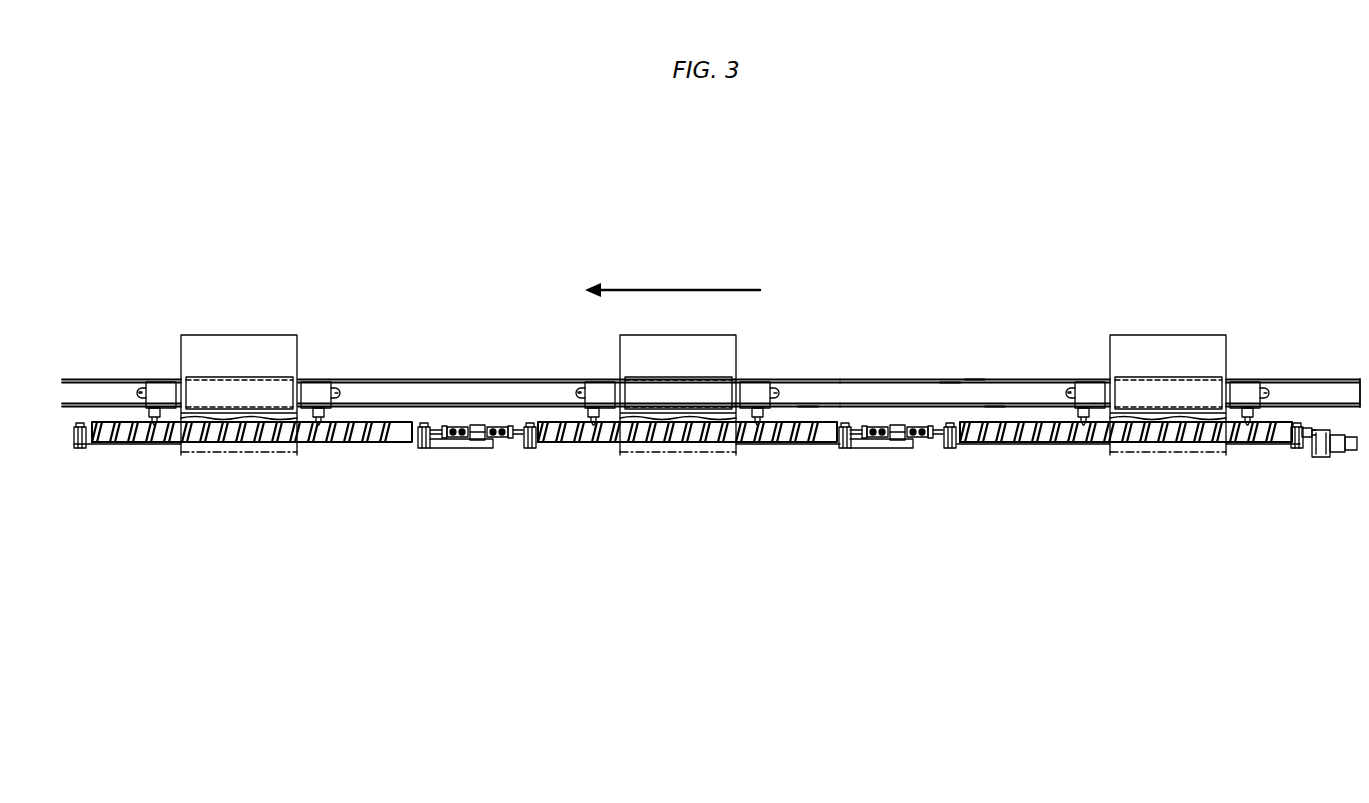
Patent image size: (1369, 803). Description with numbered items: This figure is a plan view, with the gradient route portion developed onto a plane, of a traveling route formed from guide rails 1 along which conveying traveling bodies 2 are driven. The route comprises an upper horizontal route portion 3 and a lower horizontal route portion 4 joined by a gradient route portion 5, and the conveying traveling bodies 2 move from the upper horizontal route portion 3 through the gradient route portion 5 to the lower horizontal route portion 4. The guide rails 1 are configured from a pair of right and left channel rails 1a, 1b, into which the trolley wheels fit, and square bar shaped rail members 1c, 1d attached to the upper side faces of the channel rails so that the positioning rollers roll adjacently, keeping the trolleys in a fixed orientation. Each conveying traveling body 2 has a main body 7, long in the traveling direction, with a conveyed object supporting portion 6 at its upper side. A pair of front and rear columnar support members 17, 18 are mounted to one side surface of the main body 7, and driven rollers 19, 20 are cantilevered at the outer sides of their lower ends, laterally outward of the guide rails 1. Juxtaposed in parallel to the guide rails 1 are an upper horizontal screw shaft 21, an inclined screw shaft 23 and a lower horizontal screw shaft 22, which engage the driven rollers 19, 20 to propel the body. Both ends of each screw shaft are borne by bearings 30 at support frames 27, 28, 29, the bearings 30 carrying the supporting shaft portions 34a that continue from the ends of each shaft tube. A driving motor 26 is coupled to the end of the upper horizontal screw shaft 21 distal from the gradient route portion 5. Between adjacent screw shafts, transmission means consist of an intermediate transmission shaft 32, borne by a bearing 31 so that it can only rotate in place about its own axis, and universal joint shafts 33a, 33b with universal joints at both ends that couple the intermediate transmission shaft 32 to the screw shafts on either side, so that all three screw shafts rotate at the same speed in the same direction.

The guide rails 1 is at (1007, 372).
The channel rail 1a is at (973, 382).
The channel rail 1b is at (995, 408).
The square bar shaped rail member 1c is at (950, 384).
The square bar shaped rail member 1d is at (808, 407).
The conveying traveling body 2 is at (226, 335).
The upper horizontal route portion 3 is at (1313, 372).
The lower horizontal route portion 4 is at (85, 373).
The gradient route portion 5 is at (800, 372).
The conveyed object supporting portion 6 is at (256, 390).
The main body 7 is at (160, 384).
The columnar support member 17 is at (146, 392).
The columnar support member 18 is at (318, 395).
The driven roller 19 is at (154, 423).
The driven roller 20 is at (322, 423).
The upper horizontal screw shaft 21 is at (1165, 442).
The lower horizontal screw shaft 22 is at (238, 442).
The inclined screw shaft 23 is at (680, 442).
The driving motor 26 is at (1338, 455).
The support frame 27 is at (1055, 444).
The support frame 28 is at (130, 444).
The support frame 29 is at (722, 446).
The bearing 30 is at (80, 448).
The bearing 31 is at (478, 425).
The intermediate transmission shaft 32 is at (478, 448).
The universal joint shaft 33a is at (455, 427).
The universal joint shaft 33b is at (497, 446).
The supporting shaft portion 34a is at (518, 428).